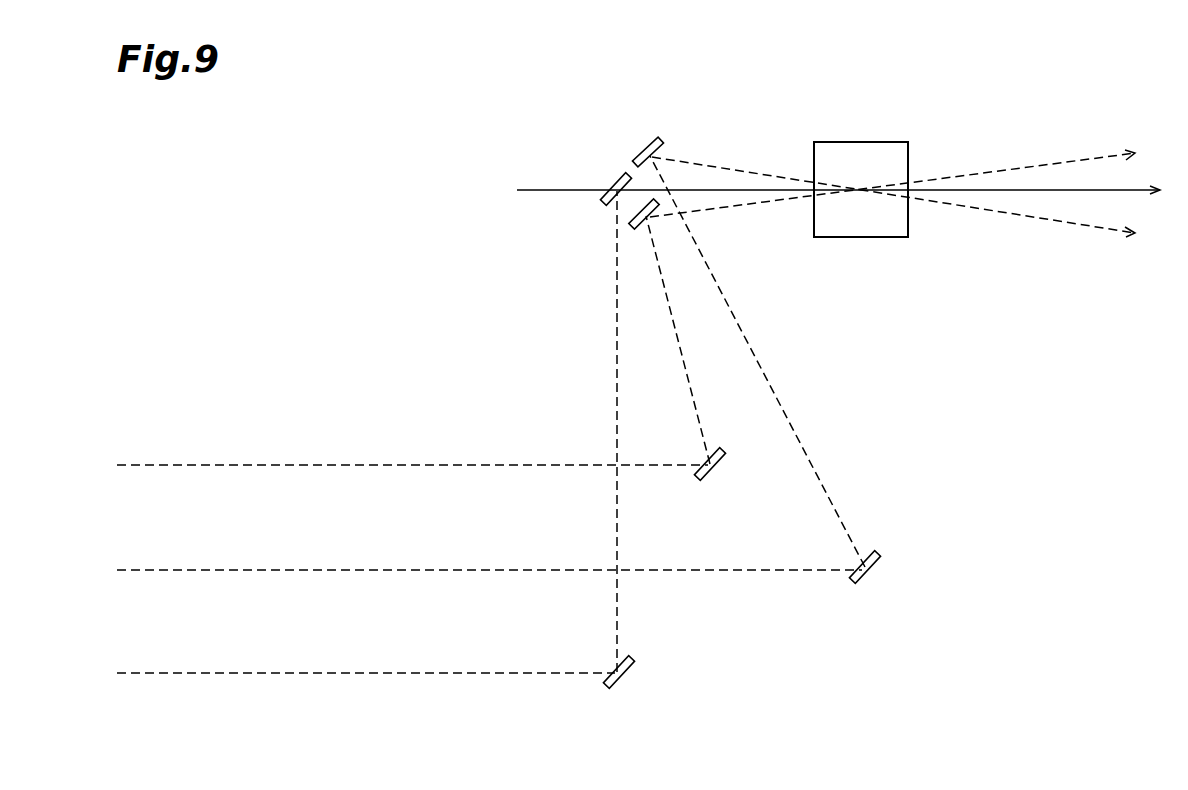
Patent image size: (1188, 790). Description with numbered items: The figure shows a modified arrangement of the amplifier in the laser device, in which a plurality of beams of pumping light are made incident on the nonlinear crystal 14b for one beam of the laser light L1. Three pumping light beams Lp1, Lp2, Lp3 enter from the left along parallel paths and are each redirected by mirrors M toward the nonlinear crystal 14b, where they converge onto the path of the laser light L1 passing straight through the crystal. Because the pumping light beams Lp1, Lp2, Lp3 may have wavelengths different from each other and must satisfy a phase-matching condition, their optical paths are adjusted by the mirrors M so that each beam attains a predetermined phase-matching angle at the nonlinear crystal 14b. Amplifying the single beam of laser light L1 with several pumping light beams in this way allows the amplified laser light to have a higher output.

The nonlinear crystal 14b is at (860, 142).
The mirror M is at (612, 177).
The laser light L1 is at (538, 190).
The pumping light beam Lp1 is at (150, 464).
The pumping light beam Lp2 is at (150, 569).
The pumping light beam Lp3 is at (150, 672).